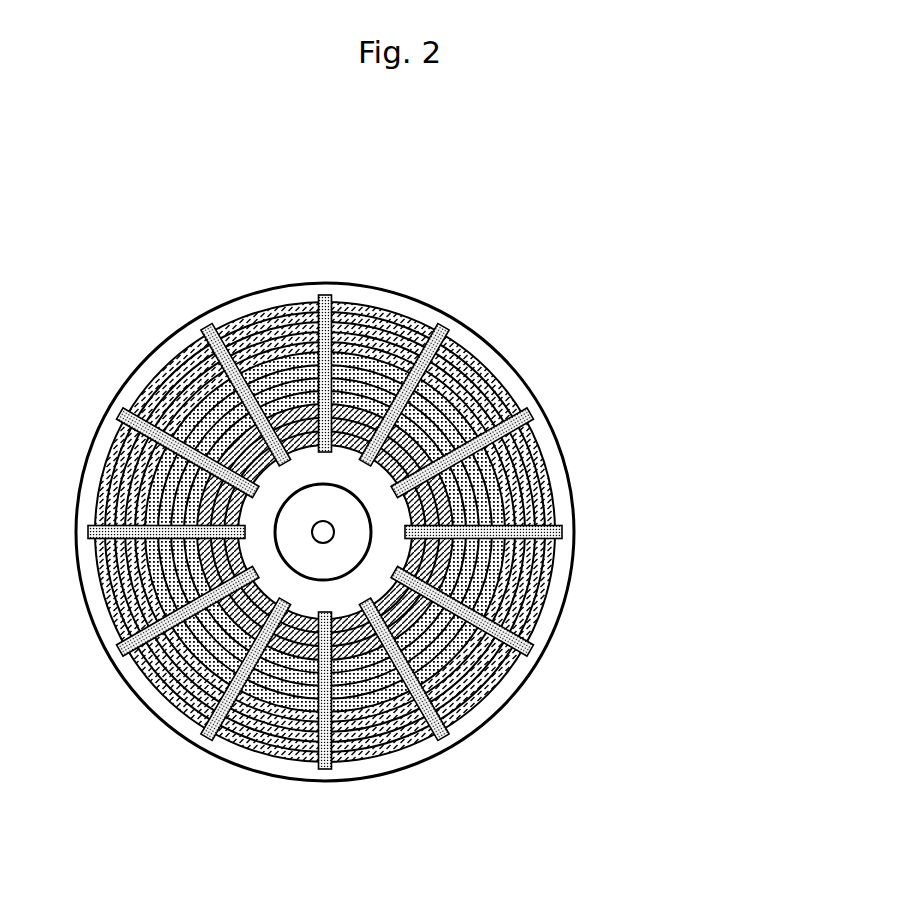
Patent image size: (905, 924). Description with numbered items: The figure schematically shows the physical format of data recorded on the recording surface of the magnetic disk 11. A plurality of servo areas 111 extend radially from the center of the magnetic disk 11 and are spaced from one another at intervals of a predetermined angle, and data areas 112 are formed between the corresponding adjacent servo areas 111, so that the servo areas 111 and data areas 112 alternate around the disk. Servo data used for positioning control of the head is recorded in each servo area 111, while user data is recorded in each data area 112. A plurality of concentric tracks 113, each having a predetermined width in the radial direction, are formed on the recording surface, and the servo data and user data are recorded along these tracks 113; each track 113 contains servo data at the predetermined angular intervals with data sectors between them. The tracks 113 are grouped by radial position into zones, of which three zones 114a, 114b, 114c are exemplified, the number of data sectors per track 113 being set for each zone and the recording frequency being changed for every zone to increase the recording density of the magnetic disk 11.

The magnetic disk 11 is at (252, 840).
The servo area 111 is at (538, 412).
The data area 112 is at (398, 325).
The track 113 is at (552, 484).
The zone 114a is at (398, 742).
The zone 114b is at (488, 668).
The zone 114c is at (552, 588).